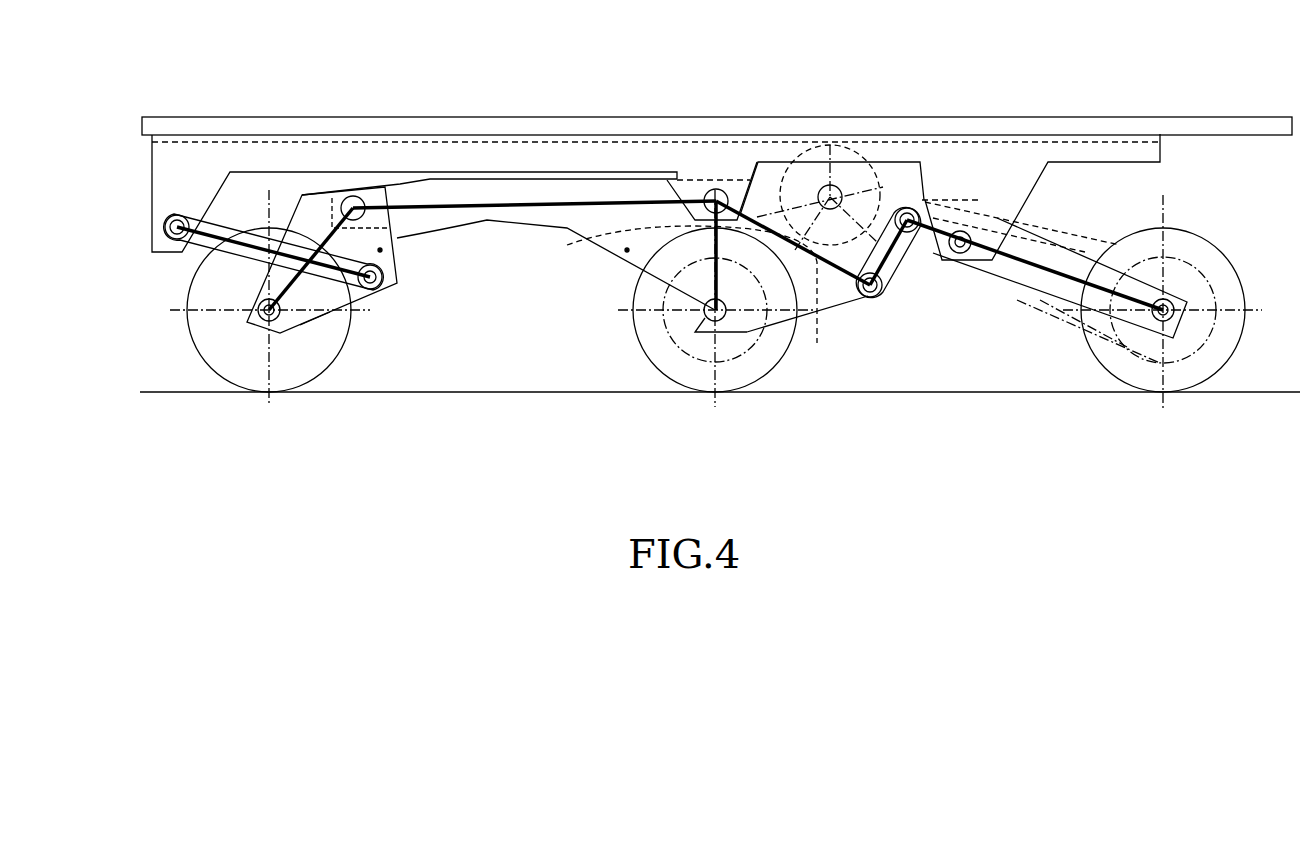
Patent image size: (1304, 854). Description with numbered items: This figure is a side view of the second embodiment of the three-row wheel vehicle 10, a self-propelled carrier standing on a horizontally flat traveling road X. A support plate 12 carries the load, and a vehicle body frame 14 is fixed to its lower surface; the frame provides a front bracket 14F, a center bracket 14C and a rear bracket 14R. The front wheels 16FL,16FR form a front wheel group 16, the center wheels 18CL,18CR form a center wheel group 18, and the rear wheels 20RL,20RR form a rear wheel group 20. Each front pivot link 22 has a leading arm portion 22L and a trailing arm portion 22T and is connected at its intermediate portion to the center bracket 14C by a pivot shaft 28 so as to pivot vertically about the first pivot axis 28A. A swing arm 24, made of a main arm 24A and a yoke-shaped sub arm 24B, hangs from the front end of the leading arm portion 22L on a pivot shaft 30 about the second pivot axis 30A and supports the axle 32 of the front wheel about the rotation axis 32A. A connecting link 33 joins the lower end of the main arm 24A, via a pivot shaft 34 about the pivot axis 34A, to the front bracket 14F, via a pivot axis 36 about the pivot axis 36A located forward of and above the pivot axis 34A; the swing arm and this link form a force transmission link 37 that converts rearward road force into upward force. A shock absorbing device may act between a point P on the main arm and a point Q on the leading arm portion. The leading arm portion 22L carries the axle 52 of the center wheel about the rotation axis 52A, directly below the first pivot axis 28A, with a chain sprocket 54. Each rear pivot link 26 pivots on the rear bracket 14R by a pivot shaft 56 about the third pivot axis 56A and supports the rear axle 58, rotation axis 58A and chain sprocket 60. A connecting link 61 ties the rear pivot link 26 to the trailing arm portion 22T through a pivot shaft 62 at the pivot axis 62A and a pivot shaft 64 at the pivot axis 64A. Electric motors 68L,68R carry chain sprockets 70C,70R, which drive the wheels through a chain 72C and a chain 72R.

The three-row wheel vehicle 10 is at (152, 98).
The support plate 12 is at (1240, 128).
The vehicle body frame 14 is at (656, 159).
The front bracket 14F is at (195, 165).
The center bracket 14C is at (705, 193).
The rear bracket 14R is at (1015, 178).
The front wheel group 16 is at (205, 322).
The front wheels 16FL,16FR is at (212, 373).
The center wheel group 18 is at (763, 332).
The center wheels 18CL,18CR is at (765, 350).
The rear wheel group 20 is at (1171, 335).
The rear wheels 20RL,20RR is at (1195, 365).
The front pivot link 22 is at (509, 136).
The leading arm portion 22L is at (485, 185).
The trailing arm portion 22T is at (835, 325).
The swing arm 24 is at (481, 255).
The main arm 24A is at (397, 238).
The sub arm 24B is at (307, 313).
The rear pivot link 26 is at (1078, 238).
The pivot shaft 28 is at (710, 190).
The first pivot axis 28A is at (720, 189).
The pivot shaft 30 is at (365, 220).
The second pivot axis 30A is at (350, 197).
The axle 32 is at (265, 340).
The rotation axis 32A is at (258, 306).
The connecting link 33 is at (248, 226).
The pivot shaft 34 is at (395, 282).
The pivot axis 34A is at (372, 290).
The pivot axis (pivot shaft) 36 is at (170, 233).
The pivot axis 36A is at (172, 220).
The force transmission link 37 is at (244, 216).
The axle 52 is at (700, 318).
The rotation axis 52A is at (710, 325).
The chain sprocket 54 is at (755, 368).
The pivot shaft 56 is at (960, 255).
The third pivot axis 56A is at (960, 230).
The axle 58 is at (1172, 300).
The rotation axis 58A is at (1200, 330).
The chain sprocket 60 is at (1185, 255).
The connecting link 61 is at (906, 266).
The pivot shaft 62 is at (908, 200).
The pivot axis 62A is at (903, 208).
The pivot shaft 64 is at (870, 298).
The pivot axis 64A is at (882, 292).
The electric motors 68L,68R is at (790, 148).
The chain sprockets 70C,70R is at (832, 145).
The chain 72C is at (567, 245).
The chain 72R is at (1037, 308).
The point on the main arm P is at (382, 252).
The point on the leading arm portion Q is at (625, 252).
The traveling road X is at (515, 384).